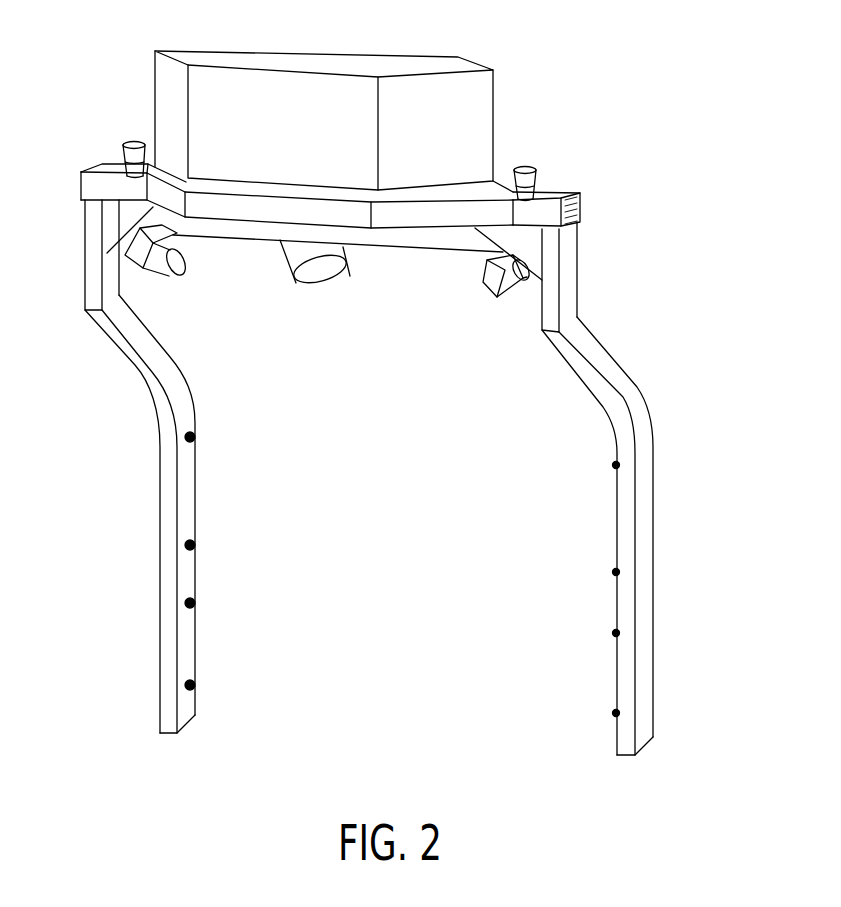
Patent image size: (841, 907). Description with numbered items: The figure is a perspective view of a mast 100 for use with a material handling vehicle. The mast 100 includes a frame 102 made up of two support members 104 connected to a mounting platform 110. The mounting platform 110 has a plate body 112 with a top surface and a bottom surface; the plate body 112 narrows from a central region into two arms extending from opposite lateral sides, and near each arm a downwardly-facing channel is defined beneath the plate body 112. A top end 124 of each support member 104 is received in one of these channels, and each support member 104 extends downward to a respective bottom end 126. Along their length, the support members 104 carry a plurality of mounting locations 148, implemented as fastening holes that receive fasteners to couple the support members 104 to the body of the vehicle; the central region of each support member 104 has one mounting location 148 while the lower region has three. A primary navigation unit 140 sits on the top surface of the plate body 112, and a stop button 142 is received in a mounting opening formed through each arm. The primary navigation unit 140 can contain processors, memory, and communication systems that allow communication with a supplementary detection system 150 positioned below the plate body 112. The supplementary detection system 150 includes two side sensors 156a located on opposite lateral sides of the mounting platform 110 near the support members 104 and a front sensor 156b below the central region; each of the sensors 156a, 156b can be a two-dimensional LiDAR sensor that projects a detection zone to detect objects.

The mast 100 is at (713, 171).
The frame 102 is at (642, 517).
The support member 104 is at (190, 645).
The mounting platform 110 is at (95, 189).
The plate body 112 is at (540, 218).
The top end 124 is at (92, 250).
The bottom end 126 is at (168, 716).
The primary navigation unit 140 is at (372, 62).
The stop button 142 is at (132, 142).
The mounting location 148 is at (193, 437).
The supplementary detection system 150 is at (185, 265).
The side sensor 156a is at (520, 297).
The front sensor 156b is at (163, 273).